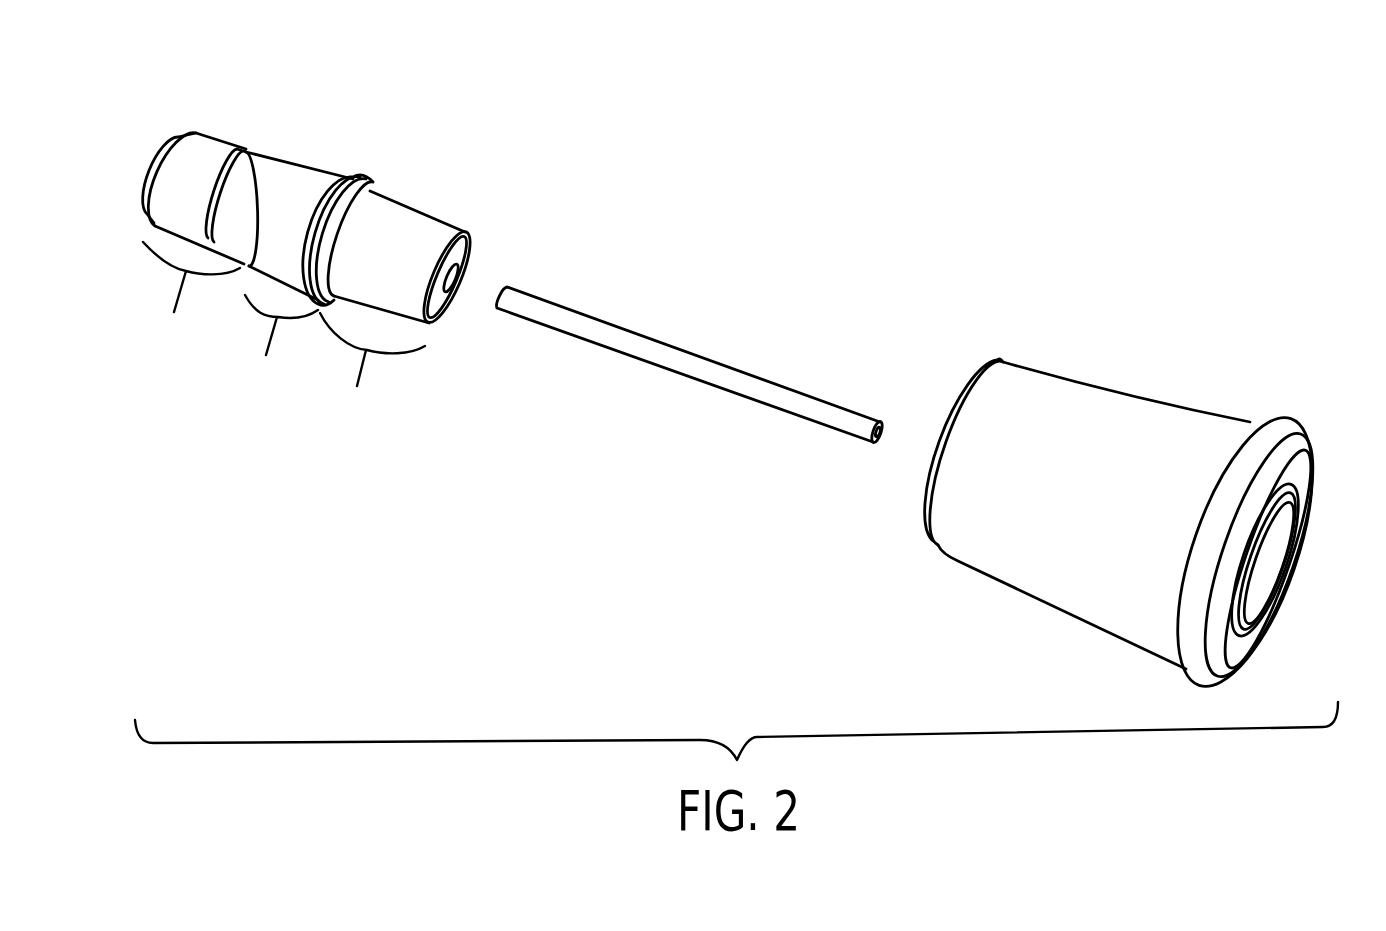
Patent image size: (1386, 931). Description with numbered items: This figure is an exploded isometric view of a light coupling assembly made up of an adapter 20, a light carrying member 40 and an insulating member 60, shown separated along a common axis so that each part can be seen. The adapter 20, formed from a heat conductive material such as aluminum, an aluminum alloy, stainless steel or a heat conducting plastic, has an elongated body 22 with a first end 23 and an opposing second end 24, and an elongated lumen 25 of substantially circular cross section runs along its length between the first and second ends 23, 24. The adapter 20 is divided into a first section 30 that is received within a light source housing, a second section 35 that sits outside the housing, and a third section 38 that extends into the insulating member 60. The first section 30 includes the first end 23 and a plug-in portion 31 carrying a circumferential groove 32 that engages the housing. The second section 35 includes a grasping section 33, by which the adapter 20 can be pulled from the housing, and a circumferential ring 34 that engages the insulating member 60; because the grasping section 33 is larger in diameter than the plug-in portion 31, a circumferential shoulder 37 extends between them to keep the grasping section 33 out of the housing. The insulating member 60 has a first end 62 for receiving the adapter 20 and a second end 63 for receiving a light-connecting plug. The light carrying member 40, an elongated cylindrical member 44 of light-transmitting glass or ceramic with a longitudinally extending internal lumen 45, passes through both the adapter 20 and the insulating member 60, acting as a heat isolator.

The adapter 20 is at (385, 198).
The elongated body 22 is at (313, 172).
The first end 23 is at (172, 133).
The second end 24 is at (468, 228).
The elongated lumen 25 is at (458, 282).
The first section 30 is at (177, 202).
The plug-in portion 31 is at (170, 186).
The circumferential groove 32 is at (247, 150).
The grasping section 33 is at (340, 174).
The circumferential ring 34 is at (358, 178).
The second section 35 is at (303, 230).
The circumferential shoulder 37 is at (282, 158).
The third section 38 is at (406, 268).
The light carrying member 40 is at (657, 338).
The elongated cylindrical member 44 is at (703, 365).
The internal lumen 45 is at (883, 430).
The insulating member 60 is at (1007, 348).
The first end 62 is at (980, 357).
The second end 63 is at (1313, 457).